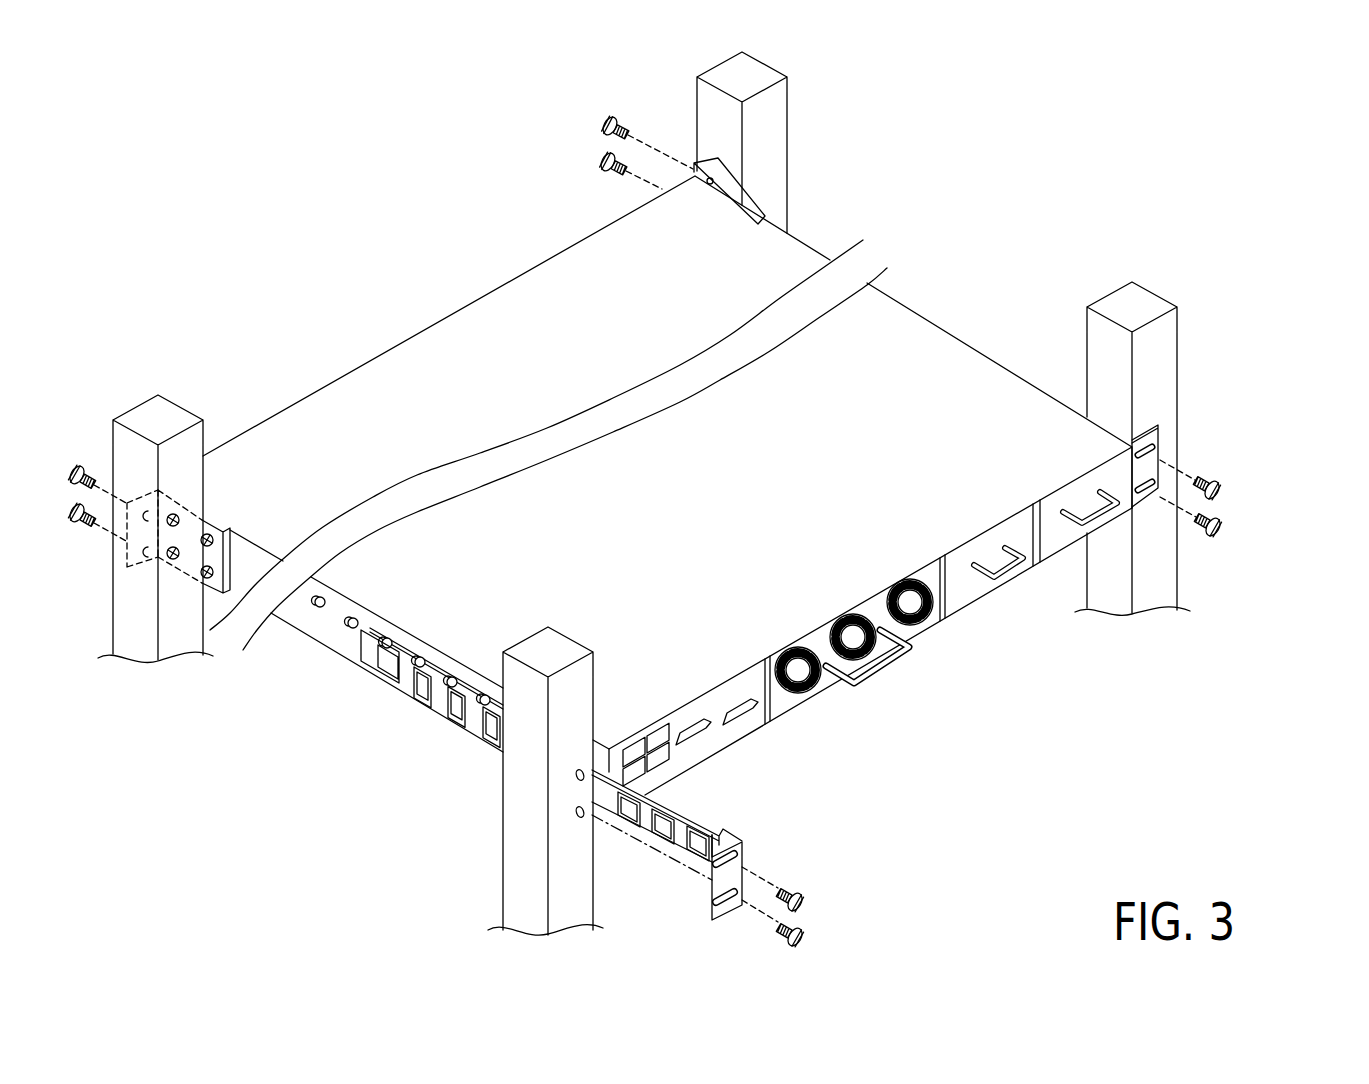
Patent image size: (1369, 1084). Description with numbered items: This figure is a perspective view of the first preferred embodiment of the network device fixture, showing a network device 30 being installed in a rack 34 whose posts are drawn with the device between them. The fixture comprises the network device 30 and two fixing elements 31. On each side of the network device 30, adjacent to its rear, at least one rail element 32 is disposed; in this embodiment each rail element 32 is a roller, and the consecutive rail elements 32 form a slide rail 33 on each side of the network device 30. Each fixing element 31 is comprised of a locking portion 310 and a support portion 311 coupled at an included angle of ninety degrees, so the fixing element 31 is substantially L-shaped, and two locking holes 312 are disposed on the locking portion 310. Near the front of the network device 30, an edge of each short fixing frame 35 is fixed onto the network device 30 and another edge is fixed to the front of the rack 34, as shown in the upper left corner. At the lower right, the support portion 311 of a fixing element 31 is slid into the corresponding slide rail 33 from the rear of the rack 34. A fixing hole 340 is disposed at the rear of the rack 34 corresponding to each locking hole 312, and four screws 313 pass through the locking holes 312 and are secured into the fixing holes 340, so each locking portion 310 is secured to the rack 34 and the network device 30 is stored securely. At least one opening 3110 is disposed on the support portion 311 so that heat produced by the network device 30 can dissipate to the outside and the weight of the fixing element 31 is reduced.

The network device 30 is at (667, 485).
The fixing element 31 is at (928, 684).
The locking portion 310 is at (725, 895).
The support portion 311 is at (696, 836).
The locking hole 312 is at (730, 853).
The screw 313 is at (1222, 535).
The opening 3110 is at (656, 840).
The rail element 32 is at (418, 657).
The slide rail 33 is at (347, 643).
The rack 34 is at (644, 493).
The short fixing frame 35 is at (207, 525).
The fixing hole 340 is at (577, 813).